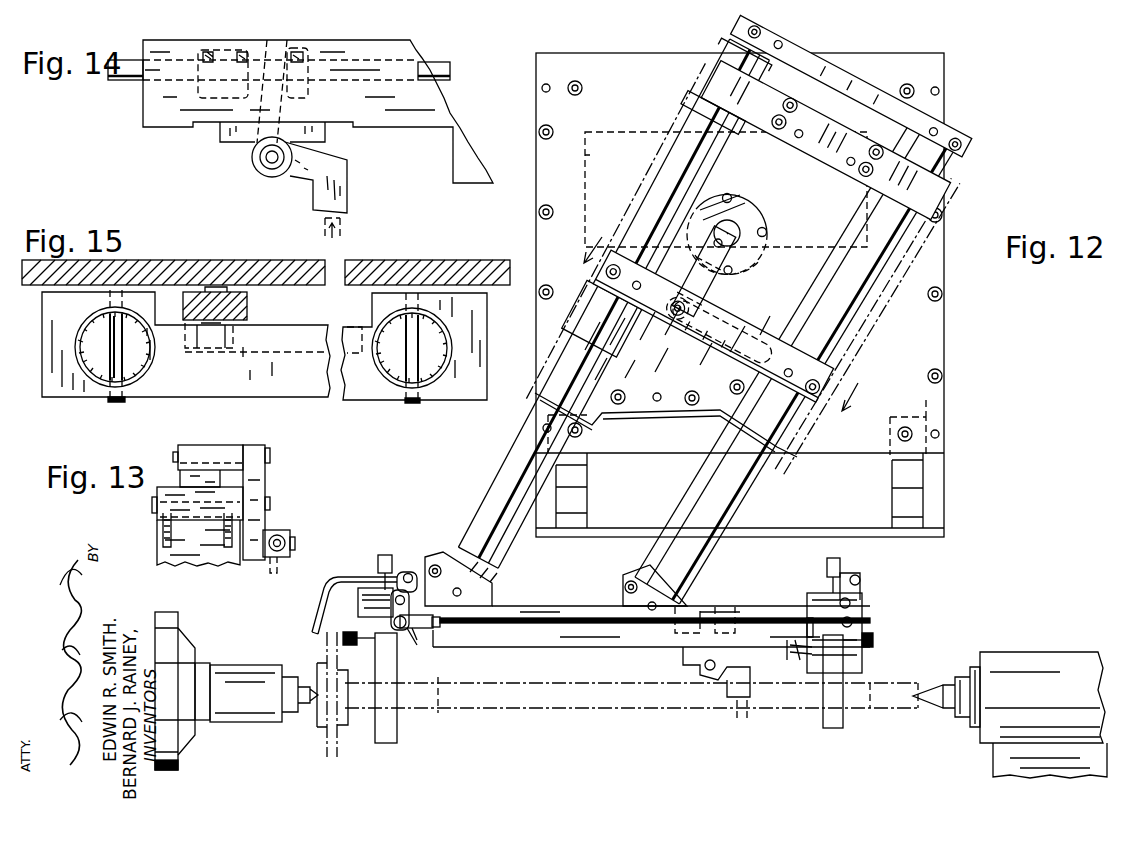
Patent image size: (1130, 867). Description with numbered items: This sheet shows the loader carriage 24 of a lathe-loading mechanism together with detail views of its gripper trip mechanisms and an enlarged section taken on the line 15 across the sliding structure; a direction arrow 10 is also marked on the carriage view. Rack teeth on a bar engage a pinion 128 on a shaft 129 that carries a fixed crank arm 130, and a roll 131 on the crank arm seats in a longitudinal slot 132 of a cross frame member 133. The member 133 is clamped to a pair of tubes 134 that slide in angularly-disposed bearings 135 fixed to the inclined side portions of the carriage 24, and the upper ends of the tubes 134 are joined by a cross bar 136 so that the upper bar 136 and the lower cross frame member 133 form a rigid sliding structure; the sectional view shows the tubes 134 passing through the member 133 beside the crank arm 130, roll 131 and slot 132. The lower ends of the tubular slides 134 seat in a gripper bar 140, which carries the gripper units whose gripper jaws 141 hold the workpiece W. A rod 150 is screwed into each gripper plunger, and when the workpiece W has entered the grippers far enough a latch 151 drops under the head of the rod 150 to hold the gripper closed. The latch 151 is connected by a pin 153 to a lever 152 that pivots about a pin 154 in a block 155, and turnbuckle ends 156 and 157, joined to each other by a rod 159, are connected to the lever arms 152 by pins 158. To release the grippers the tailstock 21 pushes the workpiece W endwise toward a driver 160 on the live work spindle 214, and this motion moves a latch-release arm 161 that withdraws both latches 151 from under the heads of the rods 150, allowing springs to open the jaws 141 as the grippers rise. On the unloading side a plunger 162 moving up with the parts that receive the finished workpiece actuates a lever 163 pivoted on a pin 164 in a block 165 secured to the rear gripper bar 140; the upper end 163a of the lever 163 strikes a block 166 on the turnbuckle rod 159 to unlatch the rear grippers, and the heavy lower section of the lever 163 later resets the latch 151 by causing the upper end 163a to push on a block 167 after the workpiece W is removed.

In FIG. 12, the mounting plate 10 is at (990, 352).
In FIG. 12, the section line 15 is at (731, 314).
In FIG. 12, the tailstock 21 is at (1025, 652).
In FIG. 12, the carriage 24 is at (935, 410).
In FIG. 12, the pinion 128 is at (755, 262).
In FIG. 12, the shaft 129 is at (745, 238).
In FIG. 15, the crank arm 130 is at (247, 306).
In FIG. 12, the crank arm 130 is at (720, 280).
In FIG. 15, the roll 131 is at (233, 335).
In FIG. 12, the roll 131 is at (690, 310).
In FIG. 15, the longitudinal slot 132 is at (255, 357).
In FIG. 12, the longitudinal slot 132 is at (763, 335).
In FIG. 15, the cross frame member 133 is at (163, 395).
In FIG. 12, the cross frame member 133 is at (826, 386).
In FIG. 15, the tubes 134 is at (82, 325).
In FIG. 12, the tubes 134 is at (826, 40).
In FIG. 12, the angularly-disposed bearings 135 is at (707, 82).
In FIG. 12, the cross bar 136 is at (862, 92).
In FIG. 14, the gripper bar 140 is at (404, 48).
In FIG. 12, the gripper bar 140 is at (520, 606).
In FIG. 12, the gripper jaws 141 is at (397, 735).
In FIG. 12, the rod 150 is at (388, 555).
In FIG. 13, the latch 151 is at (205, 447).
In FIG. 12, the latch 151 is at (410, 570).
In FIG. 13, the lever 152 is at (265, 485).
In FIG. 12, the lever 152 is at (417, 585).
In FIG. 13, the pin 153 is at (270, 455).
In FIG. 13, the pin 154 is at (270, 505).
In FIG. 12, the pin 154 is at (391, 605).
In FIG. 13, the block 155 is at (157, 520).
In FIG. 12, the block 155 is at (358, 600).
In FIG. 13, the turnbuckle end 156 is at (272, 575).
In FIG. 12, the turnbuckle end 156 is at (446, 606).
In FIG. 12, the turnbuckle end 157 is at (787, 640).
In FIG. 13, the pins 158 is at (295, 543).
In FIG. 12, the pins 158 is at (420, 627).
In FIG. 14, the rod 159 is at (127, 60).
In FIG. 12, the rod 159 is at (490, 630).
In FIG. 12, the driver 160 is at (282, 690).
In FIG. 12, the latch-release arm 161 is at (350, 605).
In FIG. 14, the plunger 162 is at (340, 228).
In FIG. 14, the lever 163 is at (347, 193).
In FIG. 14, the upper end of lever 163a is at (268, 36).
In FIG. 14, the pin 164 is at (252, 157).
In FIG. 14, the block 165 is at (325, 143).
In FIG. 14, the block 166 is at (222, 50).
In FIG. 14, the block 167 is at (302, 48).
In FIG. 12, the spindle 214 is at (178, 755).
In FIG. 12, the workpiece W is at (590, 710).